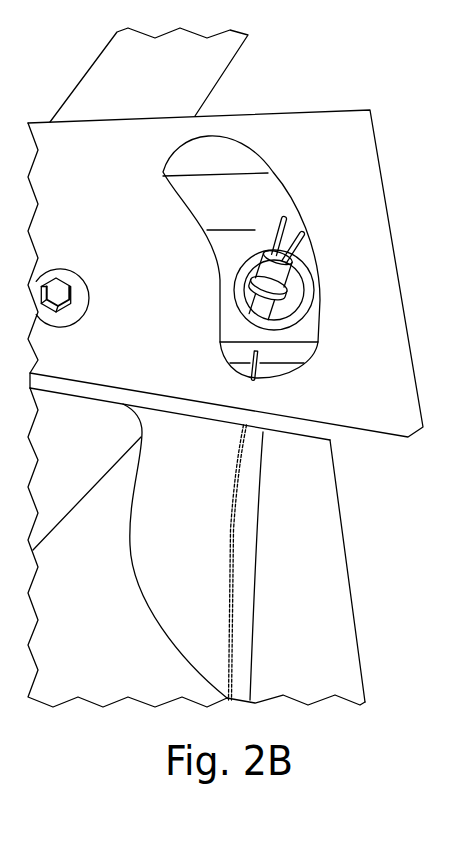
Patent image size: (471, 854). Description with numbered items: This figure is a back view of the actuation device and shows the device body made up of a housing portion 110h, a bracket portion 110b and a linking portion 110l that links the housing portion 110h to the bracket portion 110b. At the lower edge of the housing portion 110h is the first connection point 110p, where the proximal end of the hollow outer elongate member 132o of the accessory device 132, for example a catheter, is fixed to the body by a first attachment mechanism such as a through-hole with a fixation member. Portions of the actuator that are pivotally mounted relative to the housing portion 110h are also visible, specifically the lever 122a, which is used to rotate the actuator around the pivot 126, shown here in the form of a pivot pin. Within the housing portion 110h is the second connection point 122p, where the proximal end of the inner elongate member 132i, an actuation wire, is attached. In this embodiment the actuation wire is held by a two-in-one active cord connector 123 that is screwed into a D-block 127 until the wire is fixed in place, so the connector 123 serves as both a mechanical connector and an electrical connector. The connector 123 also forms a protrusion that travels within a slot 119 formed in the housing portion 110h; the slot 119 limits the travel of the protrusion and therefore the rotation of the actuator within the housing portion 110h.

The housing portion 110h is at (373, 137).
The linking portion 110l is at (357, 664).
The first connection point 110p is at (266, 426).
The bracket portion 110b is at (91, 505).
The slot 119 is at (167, 165).
The lever 122a is at (101, 59).
The second connection point 122p is at (311, 351).
The 2-in-1 active cord connector 123 is at (300, 235).
The pivot 126 is at (58, 270).
The D-block 127 is at (284, 290).
The accessory device 132 is at (258, 577).
The inner elongate member 132i is at (266, 373).
The hollow outer elongate member 132o is at (248, 512).